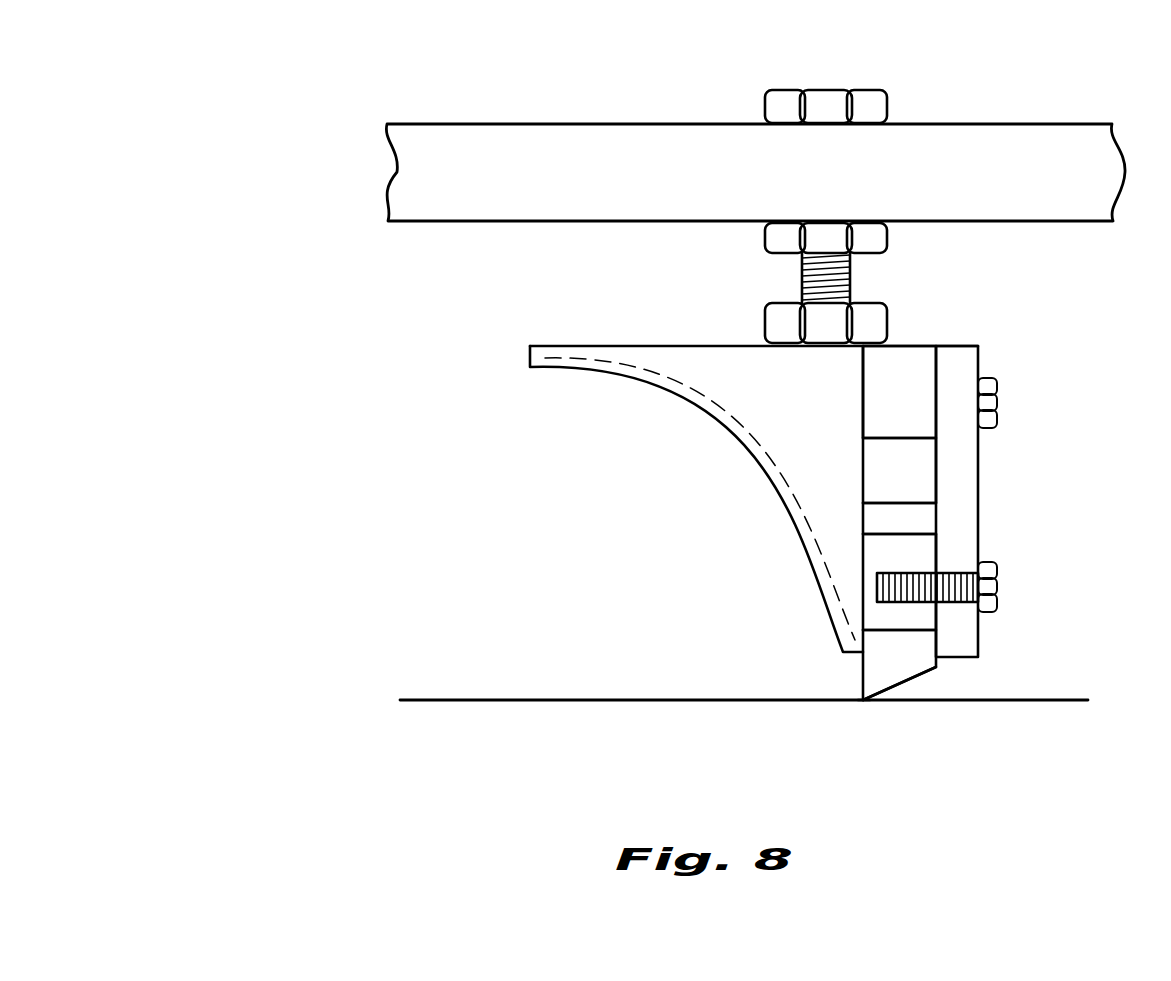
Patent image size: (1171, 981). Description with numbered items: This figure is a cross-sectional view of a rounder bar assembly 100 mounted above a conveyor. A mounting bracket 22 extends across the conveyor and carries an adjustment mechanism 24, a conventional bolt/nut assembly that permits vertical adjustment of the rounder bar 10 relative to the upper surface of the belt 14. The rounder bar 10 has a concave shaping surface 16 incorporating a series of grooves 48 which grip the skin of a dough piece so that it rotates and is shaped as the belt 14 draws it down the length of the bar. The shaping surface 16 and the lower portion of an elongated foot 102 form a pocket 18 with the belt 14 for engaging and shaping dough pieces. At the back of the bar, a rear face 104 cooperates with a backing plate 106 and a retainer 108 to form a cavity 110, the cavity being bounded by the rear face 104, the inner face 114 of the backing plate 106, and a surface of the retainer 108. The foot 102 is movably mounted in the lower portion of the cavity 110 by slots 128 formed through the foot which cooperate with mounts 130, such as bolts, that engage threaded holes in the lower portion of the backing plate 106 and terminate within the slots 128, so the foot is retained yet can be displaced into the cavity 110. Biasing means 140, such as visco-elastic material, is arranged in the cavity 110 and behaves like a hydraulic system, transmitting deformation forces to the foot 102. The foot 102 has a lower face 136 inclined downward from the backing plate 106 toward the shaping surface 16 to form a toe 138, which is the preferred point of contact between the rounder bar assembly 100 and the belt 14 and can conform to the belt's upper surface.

The mounting bracket 22 is at (1005, 143).
The adjustment mechanism 24 is at (870, 272).
The rounder bar 10 is at (608, 337).
The shaping surface 16 is at (726, 433).
The grooves 48 is at (661, 381).
The rounder bar assembly 100 is at (467, 350).
The pocket 18 is at (560, 482).
The belt 14 is at (482, 698).
The retainer 108 is at (910, 360).
The backing plate 106 is at (962, 360).
The inner face 114 is at (933, 405).
The cavity 110 is at (852, 547).
The biasing means 140 is at (915, 470).
The rear face 104 is at (865, 521).
The slots 128 is at (915, 553).
The mounts 130 is at (990, 587).
The foot 102 is at (910, 650).
The lower face 136 is at (900, 686).
The toe 138 is at (875, 702).